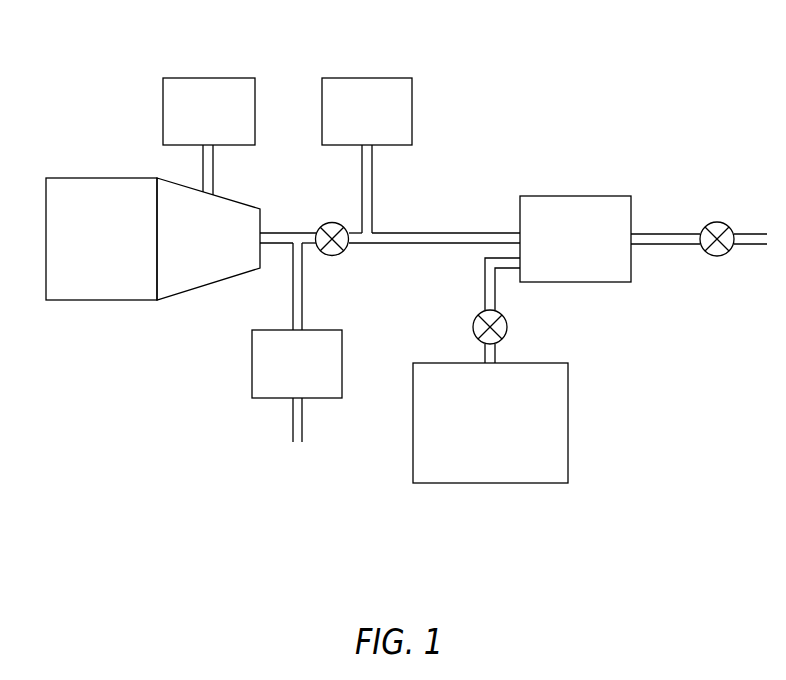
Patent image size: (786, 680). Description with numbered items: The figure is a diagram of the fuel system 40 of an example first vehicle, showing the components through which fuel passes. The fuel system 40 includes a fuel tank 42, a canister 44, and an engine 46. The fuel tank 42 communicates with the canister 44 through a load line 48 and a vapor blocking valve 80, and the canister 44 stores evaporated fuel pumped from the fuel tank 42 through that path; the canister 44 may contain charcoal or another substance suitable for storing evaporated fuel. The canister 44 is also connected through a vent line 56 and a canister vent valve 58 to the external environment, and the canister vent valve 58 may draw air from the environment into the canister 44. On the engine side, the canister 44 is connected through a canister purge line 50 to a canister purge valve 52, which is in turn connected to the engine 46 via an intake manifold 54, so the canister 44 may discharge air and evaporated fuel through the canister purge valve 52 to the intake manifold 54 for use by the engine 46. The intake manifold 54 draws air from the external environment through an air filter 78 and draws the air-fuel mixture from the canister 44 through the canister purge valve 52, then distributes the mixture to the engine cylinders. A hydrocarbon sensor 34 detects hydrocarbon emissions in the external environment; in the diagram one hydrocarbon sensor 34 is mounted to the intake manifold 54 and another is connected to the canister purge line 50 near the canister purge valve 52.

The fuel system 40 is at (680, 62).
The hydrocarbon sensor 34 is at (183, 77).
The engine 46 is at (65, 177).
The intake manifold 54 is at (187, 297).
The canister purge line 50 is at (440, 232).
The canister purge valve 52 is at (332, 221).
The air filter 78 is at (262, 399).
The canister 44 is at (550, 195).
The vent line 56 is at (672, 233).
The canister vent valve 58 is at (718, 221).
The load line 48 is at (485, 292).
The vapor blocking valve 80 is at (507, 330).
The fuel tank 42 is at (432, 362).